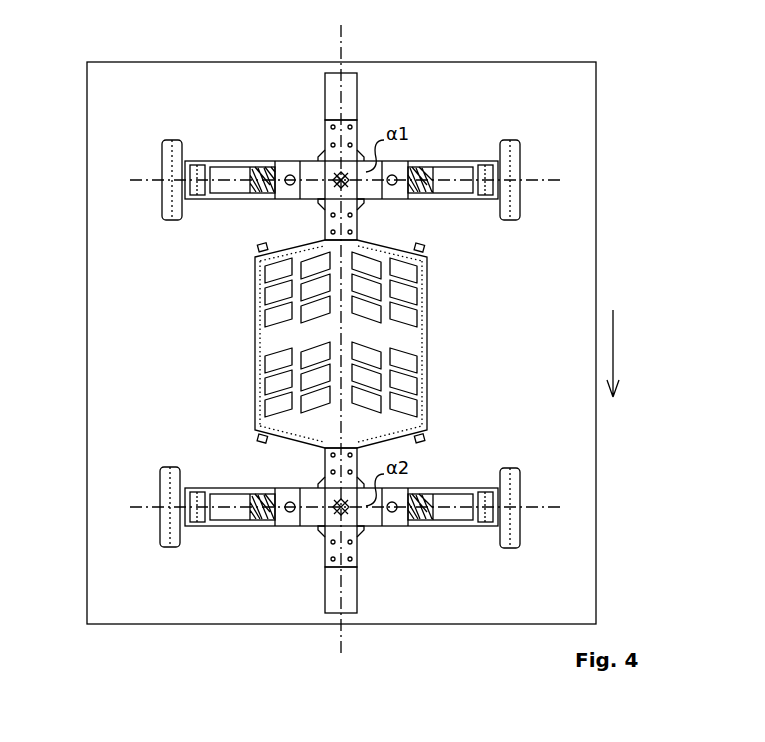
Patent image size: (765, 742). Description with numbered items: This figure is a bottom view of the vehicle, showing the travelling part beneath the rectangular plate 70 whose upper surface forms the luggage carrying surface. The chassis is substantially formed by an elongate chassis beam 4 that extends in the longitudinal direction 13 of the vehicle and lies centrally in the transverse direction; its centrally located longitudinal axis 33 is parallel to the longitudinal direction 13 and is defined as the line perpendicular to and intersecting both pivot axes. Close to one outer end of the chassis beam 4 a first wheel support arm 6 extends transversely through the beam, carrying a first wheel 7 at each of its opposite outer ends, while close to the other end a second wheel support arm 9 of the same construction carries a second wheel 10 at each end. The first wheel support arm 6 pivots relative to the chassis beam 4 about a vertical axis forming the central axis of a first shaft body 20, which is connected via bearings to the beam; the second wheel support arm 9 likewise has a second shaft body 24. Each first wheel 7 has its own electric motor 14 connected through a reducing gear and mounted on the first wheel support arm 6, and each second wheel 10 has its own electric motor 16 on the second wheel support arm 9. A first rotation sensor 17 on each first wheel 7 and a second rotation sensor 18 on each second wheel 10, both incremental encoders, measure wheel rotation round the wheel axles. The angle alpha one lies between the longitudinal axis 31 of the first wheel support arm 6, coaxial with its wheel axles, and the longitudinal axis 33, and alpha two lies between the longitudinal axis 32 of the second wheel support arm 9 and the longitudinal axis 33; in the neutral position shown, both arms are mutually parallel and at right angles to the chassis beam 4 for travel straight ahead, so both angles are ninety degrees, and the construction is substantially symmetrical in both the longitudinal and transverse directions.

The chassis beam 4 is at (346, 587).
The first wheel support arm 6 is at (465, 235).
The first wheel 7 is at (168, 188).
The second wheel support arm 9 is at (236, 428).
The second wheel 10 is at (168, 487).
The longitudinal direction 13 is at (614, 353).
The electric motor 14 is at (228, 186).
The electric motor 16 is at (226, 500).
The first rotation sensor 17 is at (200, 168).
The second rotation sensor 18 is at (200, 516).
The first shaft body 20 is at (346, 182).
The second shaft body 24 is at (336, 510).
The longitudinal axis of the first wheel support arm 31 is at (554, 181).
The longitudinal axis of the second wheel support arm 32 is at (560, 508).
The longitudinal axis of the chassis beam 33 is at (344, 28).
The rectangular plate 70 is at (597, 250).